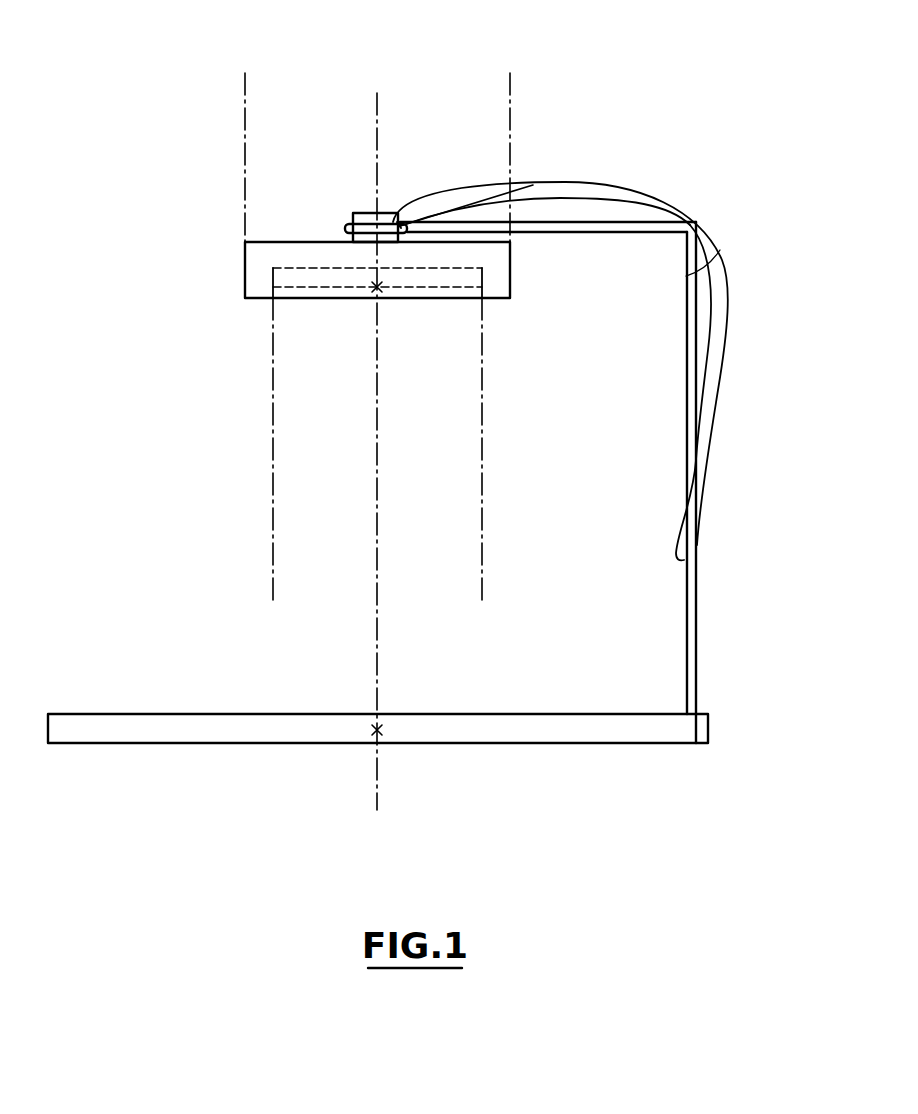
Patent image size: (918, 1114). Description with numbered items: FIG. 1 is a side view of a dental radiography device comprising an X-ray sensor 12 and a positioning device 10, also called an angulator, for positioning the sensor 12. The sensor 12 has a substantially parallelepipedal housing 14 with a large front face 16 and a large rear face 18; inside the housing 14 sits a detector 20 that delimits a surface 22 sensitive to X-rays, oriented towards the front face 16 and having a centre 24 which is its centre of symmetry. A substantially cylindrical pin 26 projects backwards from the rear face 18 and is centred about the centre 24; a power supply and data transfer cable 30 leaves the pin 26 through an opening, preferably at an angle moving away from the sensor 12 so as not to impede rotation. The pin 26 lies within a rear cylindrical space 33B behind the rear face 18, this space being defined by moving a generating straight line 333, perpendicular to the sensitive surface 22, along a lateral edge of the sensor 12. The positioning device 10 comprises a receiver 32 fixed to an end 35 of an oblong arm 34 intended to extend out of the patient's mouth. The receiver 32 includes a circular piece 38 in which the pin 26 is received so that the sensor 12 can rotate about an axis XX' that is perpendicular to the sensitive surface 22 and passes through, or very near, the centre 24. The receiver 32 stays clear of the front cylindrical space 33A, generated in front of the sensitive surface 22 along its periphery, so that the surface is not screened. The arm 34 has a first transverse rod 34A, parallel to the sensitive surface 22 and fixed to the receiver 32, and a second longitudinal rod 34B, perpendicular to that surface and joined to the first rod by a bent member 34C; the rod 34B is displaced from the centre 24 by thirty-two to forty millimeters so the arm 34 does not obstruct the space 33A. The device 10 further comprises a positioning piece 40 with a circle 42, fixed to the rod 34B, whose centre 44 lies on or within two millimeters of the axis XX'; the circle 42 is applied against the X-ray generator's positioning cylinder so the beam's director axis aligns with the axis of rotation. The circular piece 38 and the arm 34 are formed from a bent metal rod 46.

The positioning device 10 is at (416, 471).
The X-ray sensor 12 is at (353, 365).
The housing 14 is at (262, 278).
The large front face 16 is at (361, 306).
The large rear face 18 is at (313, 238).
The detector 20 is at (476, 288).
The sensitive surface 22 is at (404, 300).
The centre of the sensitive surface 24 is at (378, 291).
The pin 26 is at (364, 215).
The power supply and data transfer cable 30 is at (588, 183).
The receiver 32 is at (388, 210).
The front cylindrical space 33A is at (392, 579).
The rear cylindrical space 33B is at (328, 103).
The generating straight line 333 is at (245, 157).
The oblong arm 34 is at (589, 409).
The first transverse rod 34A is at (607, 203).
The second longitudinal rod 34B is at (699, 622).
The bent member 34C is at (681, 216).
The end of the arm 35 is at (470, 200).
The circular piece 38 is at (402, 217).
The positioning piece 40 is at (378, 754).
The circle 42 is at (255, 728).
The centre of the circle 44 is at (385, 727).
The bent metal rod 46 is at (720, 250).